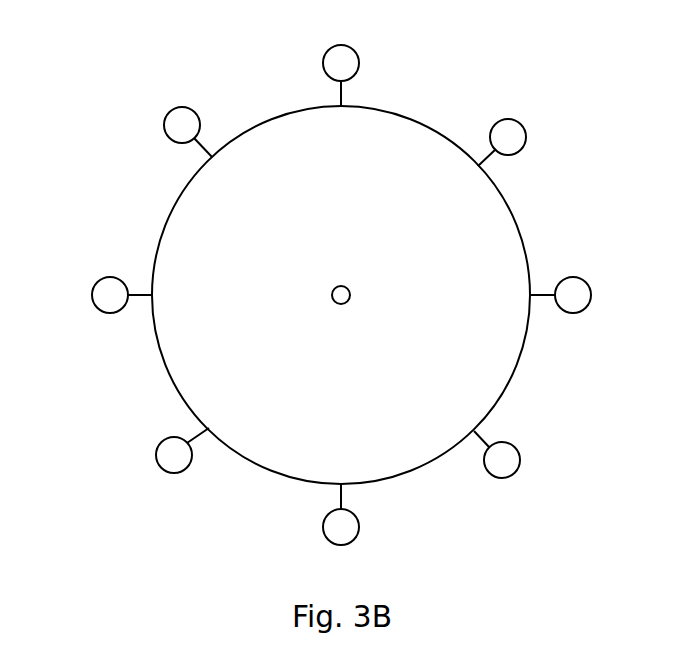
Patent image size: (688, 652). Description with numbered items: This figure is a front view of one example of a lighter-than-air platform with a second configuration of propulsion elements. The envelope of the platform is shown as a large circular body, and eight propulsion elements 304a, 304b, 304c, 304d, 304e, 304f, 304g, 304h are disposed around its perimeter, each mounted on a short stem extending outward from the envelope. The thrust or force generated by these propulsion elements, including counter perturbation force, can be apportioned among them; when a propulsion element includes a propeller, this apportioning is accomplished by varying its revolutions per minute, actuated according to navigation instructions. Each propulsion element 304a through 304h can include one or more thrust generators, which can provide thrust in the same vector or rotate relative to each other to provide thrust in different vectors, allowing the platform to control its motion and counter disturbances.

The propulsion element 304a is at (113, 276).
The propulsion element 304b is at (183, 108).
The propulsion element 304c is at (340, 46).
The propulsion element 304d is at (510, 120).
The propulsion element 304e is at (565, 281).
The propulsion element 304f is at (513, 446).
The propulsion element 304g is at (359, 521).
The propulsion element 304h is at (164, 443).